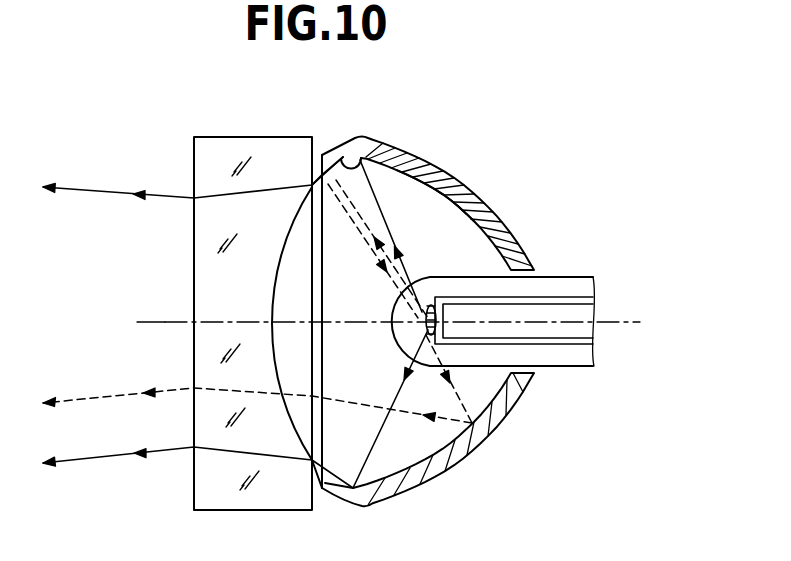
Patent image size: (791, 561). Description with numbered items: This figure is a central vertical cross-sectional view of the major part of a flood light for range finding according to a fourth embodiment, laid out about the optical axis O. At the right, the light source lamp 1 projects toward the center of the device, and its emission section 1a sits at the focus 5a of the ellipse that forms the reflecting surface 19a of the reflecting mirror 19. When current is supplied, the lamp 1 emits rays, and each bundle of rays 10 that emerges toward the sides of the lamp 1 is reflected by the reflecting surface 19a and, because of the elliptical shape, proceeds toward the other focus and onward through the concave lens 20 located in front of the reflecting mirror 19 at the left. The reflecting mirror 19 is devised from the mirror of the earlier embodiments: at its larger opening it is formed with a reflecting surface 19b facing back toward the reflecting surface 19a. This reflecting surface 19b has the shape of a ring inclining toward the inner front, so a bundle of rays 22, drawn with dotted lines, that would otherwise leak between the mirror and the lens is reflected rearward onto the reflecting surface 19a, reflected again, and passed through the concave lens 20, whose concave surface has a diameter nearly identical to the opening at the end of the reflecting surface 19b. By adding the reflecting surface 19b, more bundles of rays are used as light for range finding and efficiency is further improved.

The light source lamp 1 is at (500, 353).
The emission section 1a is at (438, 308).
The focus 5a is at (428, 340).
The bundle of rays 10 is at (105, 192).
The reflecting mirror 19 is at (483, 190).
The reflecting surface 19a is at (445, 188).
The reflecting surface 19b is at (373, 137).
The concave lens 20 is at (250, 145).
The bundle of rays 22 is at (77, 397).
The optical axis O is at (160, 323).